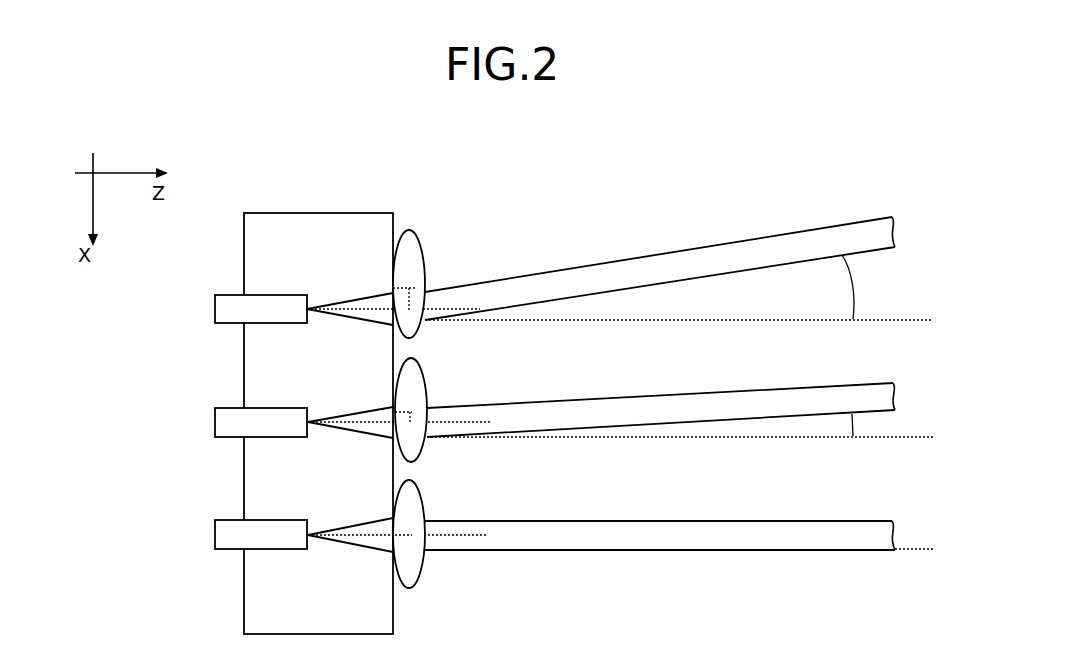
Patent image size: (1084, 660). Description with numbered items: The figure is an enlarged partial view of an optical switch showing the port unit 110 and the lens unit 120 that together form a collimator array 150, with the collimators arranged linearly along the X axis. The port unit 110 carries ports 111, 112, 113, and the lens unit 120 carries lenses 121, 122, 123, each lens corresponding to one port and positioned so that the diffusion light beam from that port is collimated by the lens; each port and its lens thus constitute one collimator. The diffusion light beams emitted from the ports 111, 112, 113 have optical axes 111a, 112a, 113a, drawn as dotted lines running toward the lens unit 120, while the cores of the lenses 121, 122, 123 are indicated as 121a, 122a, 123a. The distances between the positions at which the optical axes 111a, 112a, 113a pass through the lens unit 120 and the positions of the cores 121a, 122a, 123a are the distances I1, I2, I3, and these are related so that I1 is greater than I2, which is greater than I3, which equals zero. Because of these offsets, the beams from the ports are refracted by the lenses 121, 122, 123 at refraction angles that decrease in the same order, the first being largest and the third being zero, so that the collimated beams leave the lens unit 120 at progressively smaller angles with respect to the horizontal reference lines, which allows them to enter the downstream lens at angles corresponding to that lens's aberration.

The port unit 110 is at (218, 272).
The port 111 is at (215, 318).
The port 112 is at (215, 430).
The port 113 is at (215, 545).
The optical axis 111a is at (352, 305).
The optical axis 112a is at (360, 418).
The optical axis 113a is at (365, 531).
The lens unit 120 is at (433, 167).
The lens 121 is at (419, 243).
The lens 122 is at (419, 368).
The lens 123 is at (419, 493).
The core 121a is at (421, 291).
The core 122a is at (418, 413).
The core 123a is at (414, 533).
The collimator array 150 is at (277, 213).
The distance I1 is at (436, 288).
The distance I2 is at (429, 408).
The distance I3 is at (413, 535).